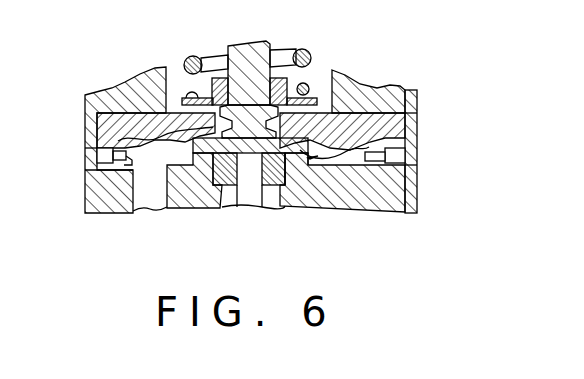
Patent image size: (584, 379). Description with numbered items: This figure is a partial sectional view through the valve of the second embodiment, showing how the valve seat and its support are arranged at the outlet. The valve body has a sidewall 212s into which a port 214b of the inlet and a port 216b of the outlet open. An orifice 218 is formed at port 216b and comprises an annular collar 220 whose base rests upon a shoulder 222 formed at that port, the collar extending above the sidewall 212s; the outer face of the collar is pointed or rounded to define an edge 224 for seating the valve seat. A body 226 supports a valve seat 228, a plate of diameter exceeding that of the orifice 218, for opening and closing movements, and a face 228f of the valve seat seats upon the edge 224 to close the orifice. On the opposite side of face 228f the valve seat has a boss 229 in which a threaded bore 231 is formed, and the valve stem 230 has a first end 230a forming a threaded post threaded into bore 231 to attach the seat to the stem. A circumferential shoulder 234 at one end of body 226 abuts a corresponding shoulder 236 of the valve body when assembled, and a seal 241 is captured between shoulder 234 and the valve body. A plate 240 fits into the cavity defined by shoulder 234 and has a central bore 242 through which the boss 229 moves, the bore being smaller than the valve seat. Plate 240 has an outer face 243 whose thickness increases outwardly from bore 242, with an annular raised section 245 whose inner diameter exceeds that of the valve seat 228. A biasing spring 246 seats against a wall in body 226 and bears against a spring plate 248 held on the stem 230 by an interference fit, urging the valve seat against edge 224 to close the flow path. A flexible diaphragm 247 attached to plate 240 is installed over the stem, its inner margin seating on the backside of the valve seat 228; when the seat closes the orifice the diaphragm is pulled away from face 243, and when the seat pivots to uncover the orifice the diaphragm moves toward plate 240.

The sidewall 212s is at (377, 203).
The port 214b is at (85, 192).
The port 216b is at (248, 193).
The orifice 218 is at (243, 178).
The annular collar 220 is at (297, 190).
The shoulder 222 is at (285, 187).
The edge 224 is at (162, 206).
The body 226 is at (90, 95).
The valve seat 228 is at (342, 200).
The face 228f is at (257, 193).
The boss 229 is at (334, 110).
The valve stem 230 is at (240, 42).
The first end 230a is at (230, 107).
The threaded bore 231 is at (311, 110).
The circumferential shoulder 234 is at (419, 120).
The shoulder 236 is at (455, 170).
The plate 240 is at (410, 105).
The seal 241 is at (417, 165).
The central bore 242 is at (105, 128).
The outer face 243 is at (110, 164).
The annular raised section 245 is at (175, 143).
The biasing spring 246 is at (290, 47).
The flexible diaphragm 247 is at (369, 147).
The spring plate 248 is at (182, 101).